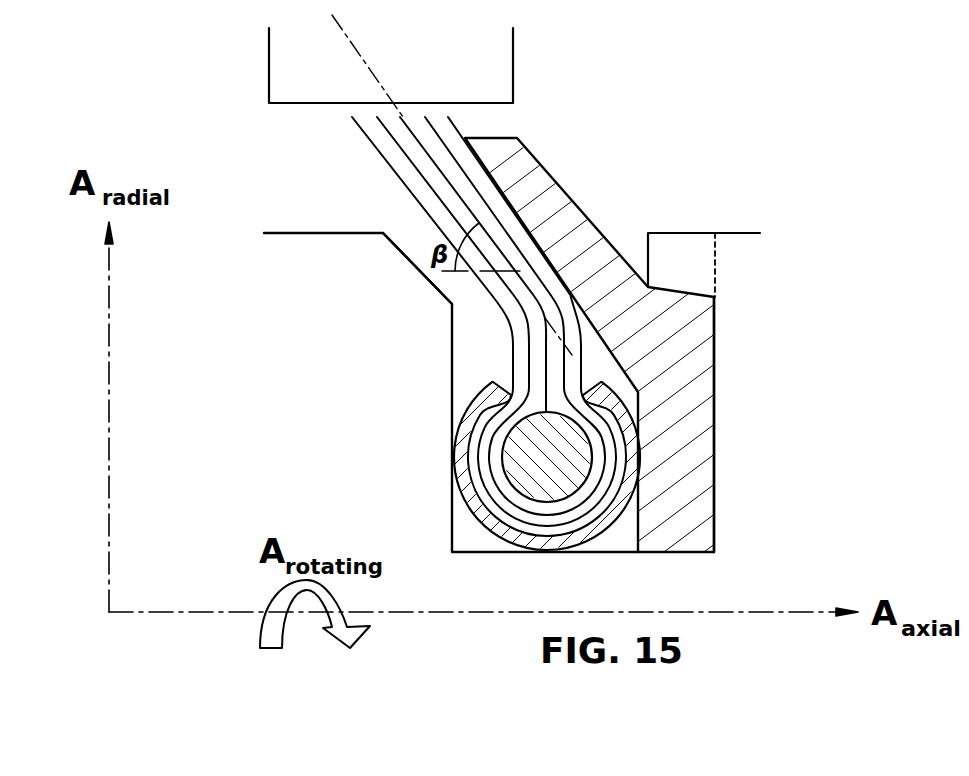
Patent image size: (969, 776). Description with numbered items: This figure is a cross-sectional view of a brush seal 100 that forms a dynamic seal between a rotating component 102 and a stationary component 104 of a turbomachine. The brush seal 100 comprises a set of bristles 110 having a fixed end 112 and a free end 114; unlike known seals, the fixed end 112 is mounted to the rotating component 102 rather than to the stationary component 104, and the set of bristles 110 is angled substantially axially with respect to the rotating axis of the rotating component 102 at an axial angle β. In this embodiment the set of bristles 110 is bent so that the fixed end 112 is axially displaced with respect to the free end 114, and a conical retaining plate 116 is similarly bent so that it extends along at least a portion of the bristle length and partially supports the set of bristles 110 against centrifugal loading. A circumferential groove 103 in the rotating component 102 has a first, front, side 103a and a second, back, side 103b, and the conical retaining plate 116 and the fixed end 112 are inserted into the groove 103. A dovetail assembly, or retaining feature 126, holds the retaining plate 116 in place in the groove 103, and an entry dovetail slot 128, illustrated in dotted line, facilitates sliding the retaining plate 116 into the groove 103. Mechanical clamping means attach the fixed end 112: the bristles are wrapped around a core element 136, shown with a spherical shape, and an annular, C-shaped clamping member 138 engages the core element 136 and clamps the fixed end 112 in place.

The brush seal 100 is at (240, 158).
The rotating component 102 is at (350, 276).
The circumferential groove 103 is at (592, 178).
The first, front, side of groove 103a is at (405, 252).
The second, back, side of groove 103b is at (713, 500).
The stationary component 104 is at (428, 64).
The set of bristles 110 is at (378, 158).
The fixed end 112 is at (507, 365).
The free end 114 is at (355, 137).
The conical retaining plate 116 is at (688, 345).
The dovetail assembly / retaining feature 126 is at (687, 266).
The entry dovetail slot 128 is at (715, 250).
The core element 136 is at (523, 462).
The clamping member 138 is at (505, 528).